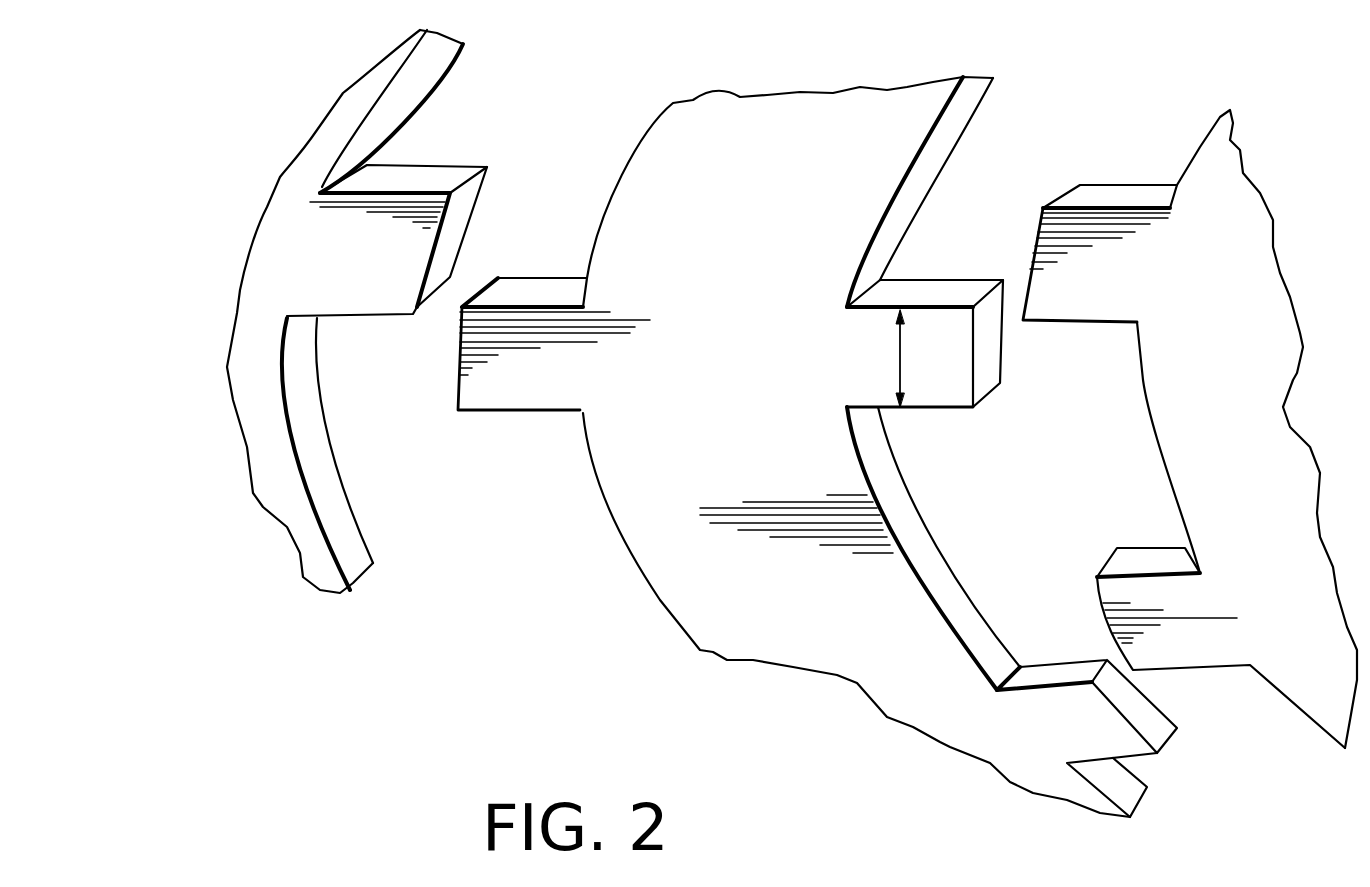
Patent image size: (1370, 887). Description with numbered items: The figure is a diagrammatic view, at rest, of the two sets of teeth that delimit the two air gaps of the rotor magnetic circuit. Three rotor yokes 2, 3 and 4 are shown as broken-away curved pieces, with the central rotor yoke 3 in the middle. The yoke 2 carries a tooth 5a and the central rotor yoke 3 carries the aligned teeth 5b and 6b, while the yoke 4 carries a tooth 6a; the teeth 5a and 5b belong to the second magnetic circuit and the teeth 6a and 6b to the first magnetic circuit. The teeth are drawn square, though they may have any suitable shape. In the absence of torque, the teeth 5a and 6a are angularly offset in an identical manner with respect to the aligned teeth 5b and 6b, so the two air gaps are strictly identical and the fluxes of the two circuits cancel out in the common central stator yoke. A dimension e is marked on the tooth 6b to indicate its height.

The rotor yoke 2 is at (333, 273).
The central rotor yoke 3 is at (760, 304).
The rotor yoke 4 is at (1217, 288).
The tooth 5a is at (430, 177).
The tooth 5b is at (530, 290).
The tooth 6a is at (1113, 195).
The tooth 6b is at (927, 293).
The tooth height dimension e is at (886, 358).